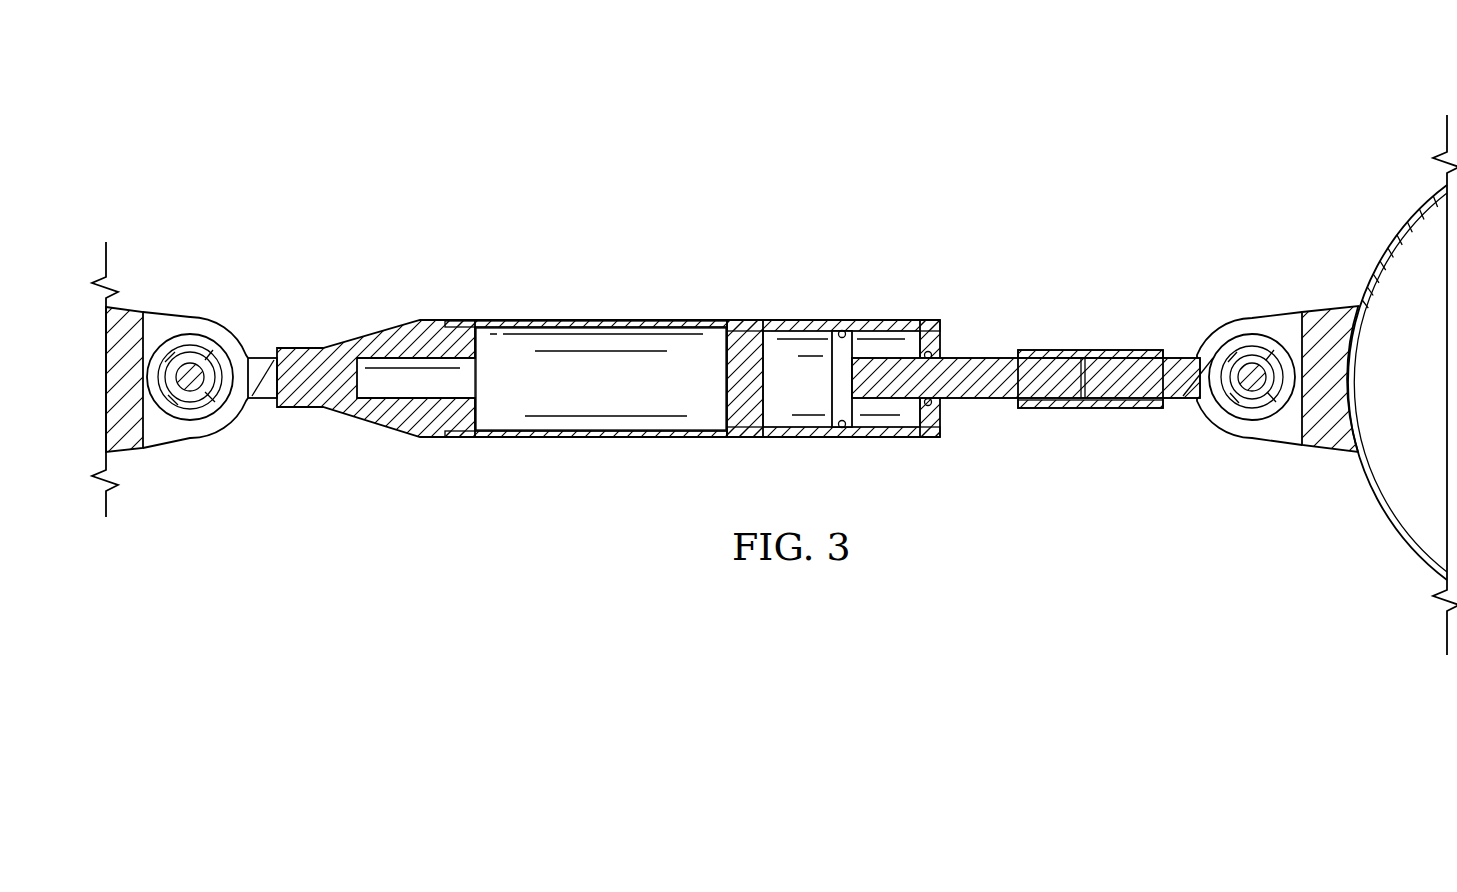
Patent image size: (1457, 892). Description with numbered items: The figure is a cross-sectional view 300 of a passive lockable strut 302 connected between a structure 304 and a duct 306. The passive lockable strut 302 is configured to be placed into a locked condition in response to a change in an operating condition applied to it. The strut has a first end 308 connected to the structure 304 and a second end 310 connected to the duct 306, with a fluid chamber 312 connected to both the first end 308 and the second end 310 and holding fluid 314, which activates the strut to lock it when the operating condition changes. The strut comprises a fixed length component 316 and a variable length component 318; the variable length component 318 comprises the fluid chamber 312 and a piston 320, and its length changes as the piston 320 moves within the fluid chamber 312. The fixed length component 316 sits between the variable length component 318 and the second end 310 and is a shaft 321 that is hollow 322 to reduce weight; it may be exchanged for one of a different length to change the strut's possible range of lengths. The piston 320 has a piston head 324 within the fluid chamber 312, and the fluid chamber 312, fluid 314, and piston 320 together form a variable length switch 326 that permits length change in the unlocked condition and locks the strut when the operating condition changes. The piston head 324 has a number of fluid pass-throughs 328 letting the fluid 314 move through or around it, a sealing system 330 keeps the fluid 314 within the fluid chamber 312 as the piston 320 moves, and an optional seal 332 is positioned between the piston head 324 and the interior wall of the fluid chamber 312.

The view 300 is at (988, 86).
The passive lockable strut 302 is at (628, 284).
The structure 304 is at (133, 308).
The duct 306 is at (1310, 307).
The first end 308 is at (213, 272).
The second end 310 is at (1234, 270).
The fluid chamber 312 is at (915, 320).
The fluid 314 is at (776, 413).
The fixed length component 316 is at (527, 320).
The variable length component 318 is at (982, 347).
The piston 320 is at (980, 400).
The shaft 321 is at (600, 444).
The hollow 322 is at (502, 408).
The piston head 324 is at (832, 405).
The variable length switch 326 is at (790, 364).
The number of fluid pass-throughs 328 is at (846, 343).
The sealing system 330 is at (940, 340).
The optional seal 332 is at (843, 428).